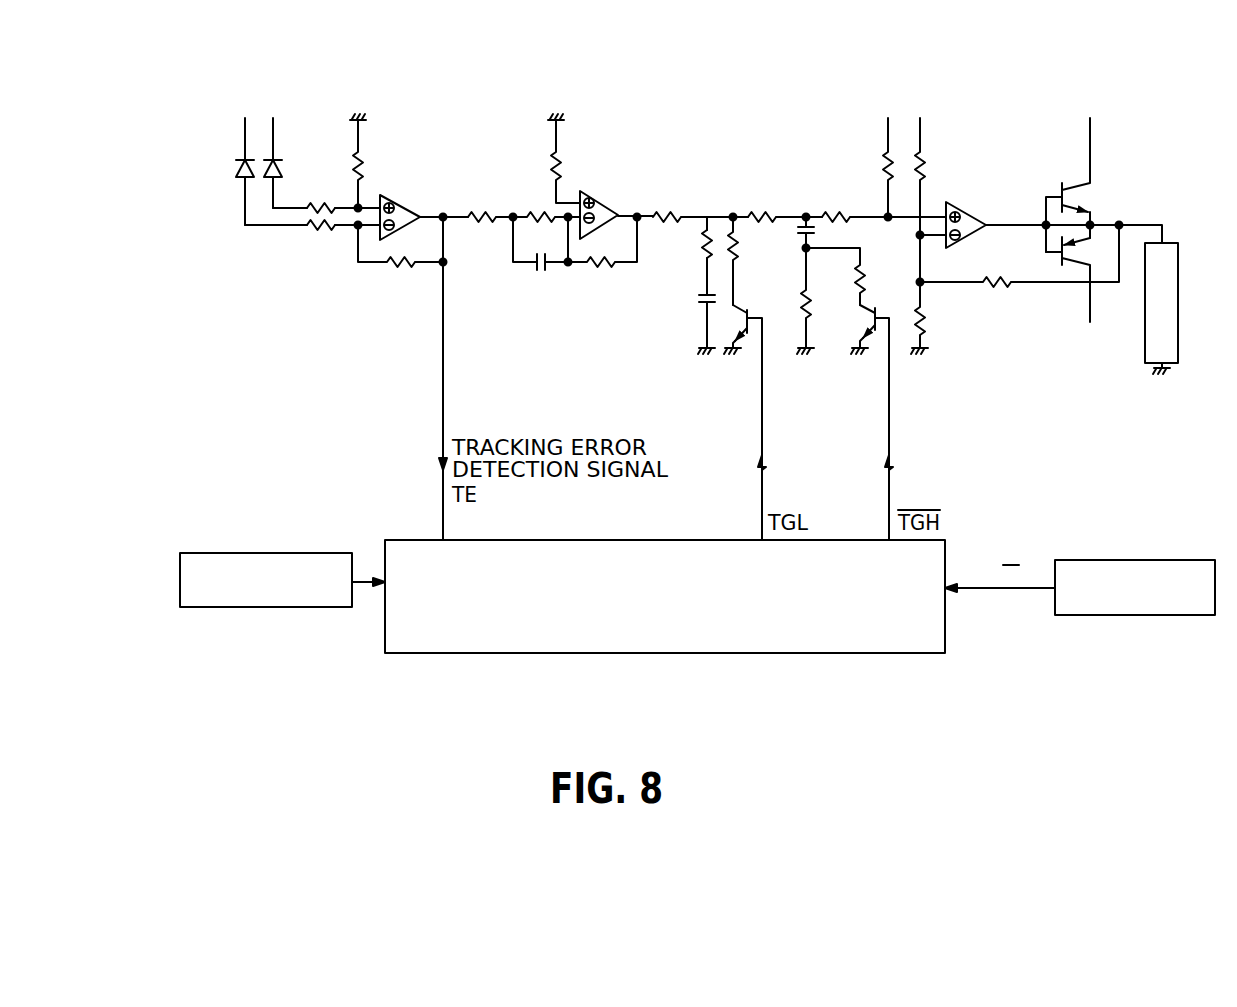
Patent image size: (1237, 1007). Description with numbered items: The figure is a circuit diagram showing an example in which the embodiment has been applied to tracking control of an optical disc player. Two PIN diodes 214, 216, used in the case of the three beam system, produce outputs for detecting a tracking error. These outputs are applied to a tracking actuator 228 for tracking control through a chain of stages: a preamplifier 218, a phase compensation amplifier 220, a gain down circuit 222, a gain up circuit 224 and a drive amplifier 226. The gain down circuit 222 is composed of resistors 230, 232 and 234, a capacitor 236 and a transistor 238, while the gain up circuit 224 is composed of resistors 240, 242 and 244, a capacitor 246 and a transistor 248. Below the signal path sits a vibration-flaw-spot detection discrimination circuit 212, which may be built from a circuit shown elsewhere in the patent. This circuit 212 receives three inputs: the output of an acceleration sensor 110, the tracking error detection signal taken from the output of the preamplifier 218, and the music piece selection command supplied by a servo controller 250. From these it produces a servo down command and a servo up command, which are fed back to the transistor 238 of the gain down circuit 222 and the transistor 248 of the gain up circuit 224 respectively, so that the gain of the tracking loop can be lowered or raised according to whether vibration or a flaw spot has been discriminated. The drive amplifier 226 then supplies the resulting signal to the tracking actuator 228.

The acceleration sensor 110 is at (272, 607).
The vibration-flaw-spot detection discrimination circuit 212 is at (555, 653).
The PIN diode 214 is at (242, 180).
The PIN diode 216 is at (282, 168).
The preamplifier 218 is at (337, 282).
The phase compensation amplifier 220 is at (537, 280).
The gain down circuit 222 is at (692, 377).
The gain up circuit 224 is at (871, 344).
The drive amplifier 226 is at (1028, 327).
The tracking actuator 228 is at (1180, 300).
The resistor 230 is at (668, 205).
The resistor 232 is at (697, 245).
The resistor 234 is at (738, 245).
The capacitor 236 is at (695, 300).
The transistor 238 is at (748, 315).
The resistor 240 is at (765, 205).
The resistor 242 is at (812, 298).
The resistor 244 is at (856, 285).
The capacitor 246 is at (818, 226).
The transistor 248 is at (890, 301).
The servo controller 250 is at (1135, 615).